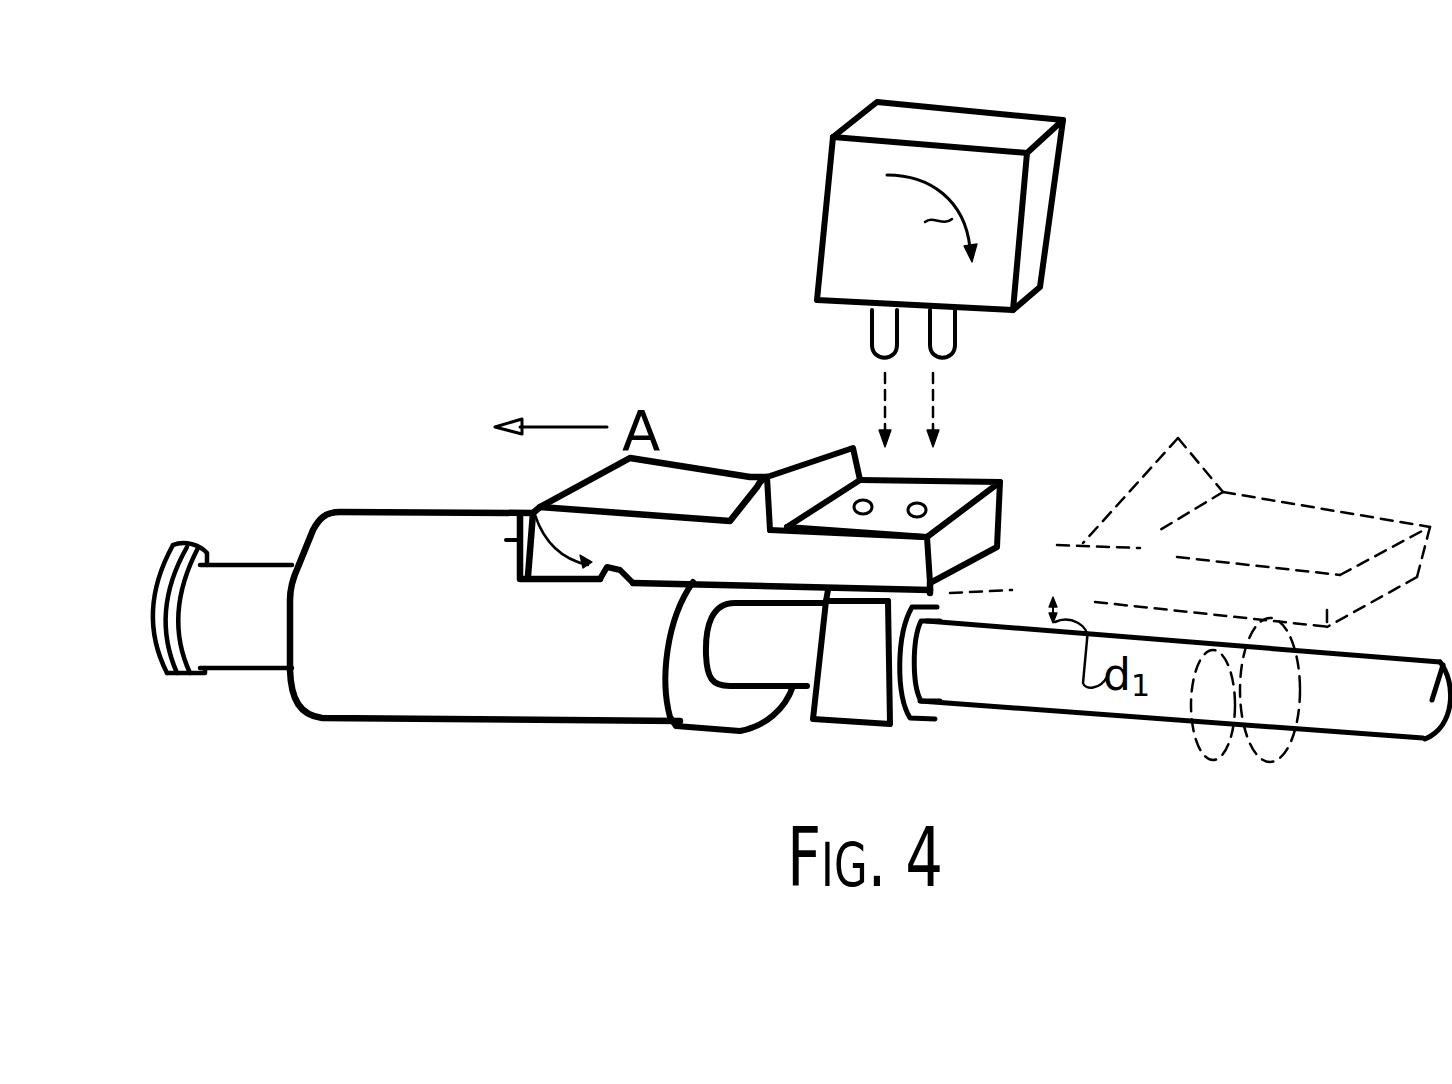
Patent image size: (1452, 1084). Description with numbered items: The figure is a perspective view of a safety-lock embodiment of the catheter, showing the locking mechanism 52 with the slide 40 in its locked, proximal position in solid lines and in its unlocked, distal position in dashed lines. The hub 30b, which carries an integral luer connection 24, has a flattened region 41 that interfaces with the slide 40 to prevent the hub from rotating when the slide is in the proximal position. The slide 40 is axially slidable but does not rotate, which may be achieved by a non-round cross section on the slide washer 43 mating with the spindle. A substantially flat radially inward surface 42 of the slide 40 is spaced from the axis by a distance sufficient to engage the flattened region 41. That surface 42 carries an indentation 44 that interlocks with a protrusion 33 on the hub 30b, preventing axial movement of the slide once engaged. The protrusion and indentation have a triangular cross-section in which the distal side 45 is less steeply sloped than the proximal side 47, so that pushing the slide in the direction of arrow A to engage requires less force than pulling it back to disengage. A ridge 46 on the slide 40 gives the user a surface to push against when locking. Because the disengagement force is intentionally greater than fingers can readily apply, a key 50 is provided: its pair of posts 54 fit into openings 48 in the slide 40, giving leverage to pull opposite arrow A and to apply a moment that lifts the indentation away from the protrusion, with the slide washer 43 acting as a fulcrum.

The luer connection 24 is at (233, 607).
The hub 30b is at (430, 633).
The protrusion 33 is at (616, 585).
The slide 40 is at (660, 490).
The flattened region 41 is at (577, 592).
The radially inward surface 42 is at (788, 610).
The slide washer 43 is at (900, 714).
The indentation 44 is at (625, 570).
The distal side 45 is at (623, 553).
The ridge 46 is at (803, 493).
The proximal side 47 is at (520, 497).
The openings 48 is at (870, 500).
The key 50 is at (1025, 215).
The locking mechanism 52 is at (586, 348).
The posts 54 is at (885, 330).